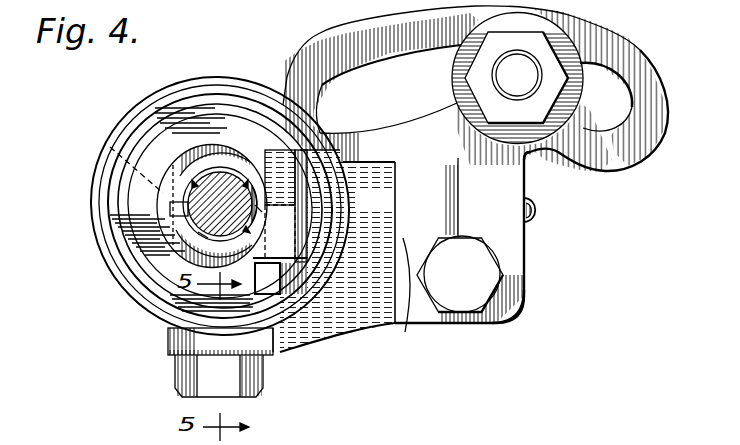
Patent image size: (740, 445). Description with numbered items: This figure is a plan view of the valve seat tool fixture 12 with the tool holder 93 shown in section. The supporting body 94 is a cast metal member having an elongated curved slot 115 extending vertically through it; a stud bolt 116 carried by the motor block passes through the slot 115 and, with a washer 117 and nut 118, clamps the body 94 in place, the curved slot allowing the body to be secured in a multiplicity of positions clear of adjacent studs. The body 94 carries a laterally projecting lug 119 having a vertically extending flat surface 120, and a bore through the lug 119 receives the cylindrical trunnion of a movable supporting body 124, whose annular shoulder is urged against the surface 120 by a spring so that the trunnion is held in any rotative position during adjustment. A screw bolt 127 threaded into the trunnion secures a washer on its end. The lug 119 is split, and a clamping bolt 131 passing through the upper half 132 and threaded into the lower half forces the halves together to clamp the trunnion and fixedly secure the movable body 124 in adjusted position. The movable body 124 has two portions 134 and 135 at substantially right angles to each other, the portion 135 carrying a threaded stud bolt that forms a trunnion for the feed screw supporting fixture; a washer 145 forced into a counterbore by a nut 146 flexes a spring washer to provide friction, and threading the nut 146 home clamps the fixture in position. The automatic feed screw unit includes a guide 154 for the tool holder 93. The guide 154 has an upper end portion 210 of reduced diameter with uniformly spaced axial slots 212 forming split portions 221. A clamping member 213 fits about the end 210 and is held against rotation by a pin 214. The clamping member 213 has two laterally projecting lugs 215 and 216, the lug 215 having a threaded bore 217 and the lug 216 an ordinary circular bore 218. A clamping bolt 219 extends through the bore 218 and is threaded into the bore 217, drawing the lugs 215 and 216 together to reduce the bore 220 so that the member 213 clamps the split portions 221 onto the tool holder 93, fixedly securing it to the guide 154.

The valve seat tool fixture 12 is at (652, 151).
The tool holder 93 is at (200, 232).
The supporting body 94 is at (522, 171).
The elongated curved slot 115 is at (383, 54).
The stud bolt 116 is at (553, 72).
The washer 117 is at (540, 30).
The nut 118 is at (522, 64).
The laterally projecting lug 119 is at (516, 256).
The vertically extending flat surface 120 is at (403, 314).
The movable supporting body 124 is at (362, 336).
The screw bolt 127 is at (537, 212).
The clamping bolt 131 is at (470, 296).
The upper half of lug 132 is at (514, 300).
The portion of movable body 134 is at (382, 218).
The portion of movable body 135 is at (281, 342).
The washer 145 is at (170, 357).
The nut 146 is at (188, 385).
The guide 154 is at (197, 228).
The upper end portion of reduced diameter 210 is at (324, 143).
The slots 212 is at (205, 150).
The clamping member 213 is at (222, 160).
The pin 214 is at (103, 137).
The laterally projecting lug 215 is at (300, 157).
The laterally projecting lug 216 is at (307, 214).
The threaded bore 217 is at (368, 145).
The circular bore 218 is at (325, 260).
The clamping bolt 219 is at (276, 285).
The bore 220 is at (233, 167).
The split portions 221 is at (262, 212).